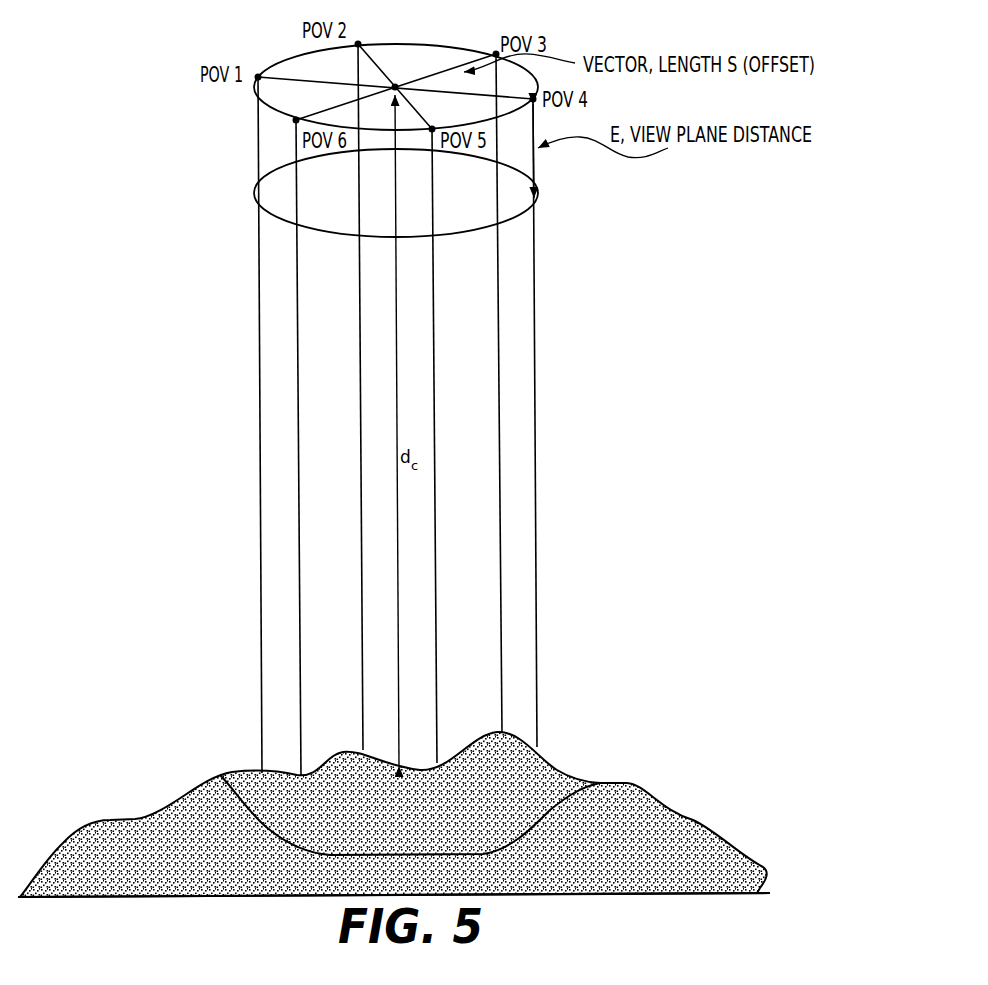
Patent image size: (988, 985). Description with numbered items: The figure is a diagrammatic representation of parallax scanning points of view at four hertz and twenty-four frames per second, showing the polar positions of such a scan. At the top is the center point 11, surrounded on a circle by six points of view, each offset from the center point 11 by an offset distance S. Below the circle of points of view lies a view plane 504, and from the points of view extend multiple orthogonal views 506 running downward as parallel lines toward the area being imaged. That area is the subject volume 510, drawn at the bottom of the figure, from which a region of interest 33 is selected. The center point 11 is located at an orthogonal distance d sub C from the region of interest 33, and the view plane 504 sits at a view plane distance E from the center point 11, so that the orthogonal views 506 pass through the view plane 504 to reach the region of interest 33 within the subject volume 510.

The center point 11 is at (380, 92).
The view plane 504 is at (548, 195).
The orthogonal views 506 is at (357, 290).
The region of interest 33 is at (399, 831).
The subject volume 510 is at (667, 827).